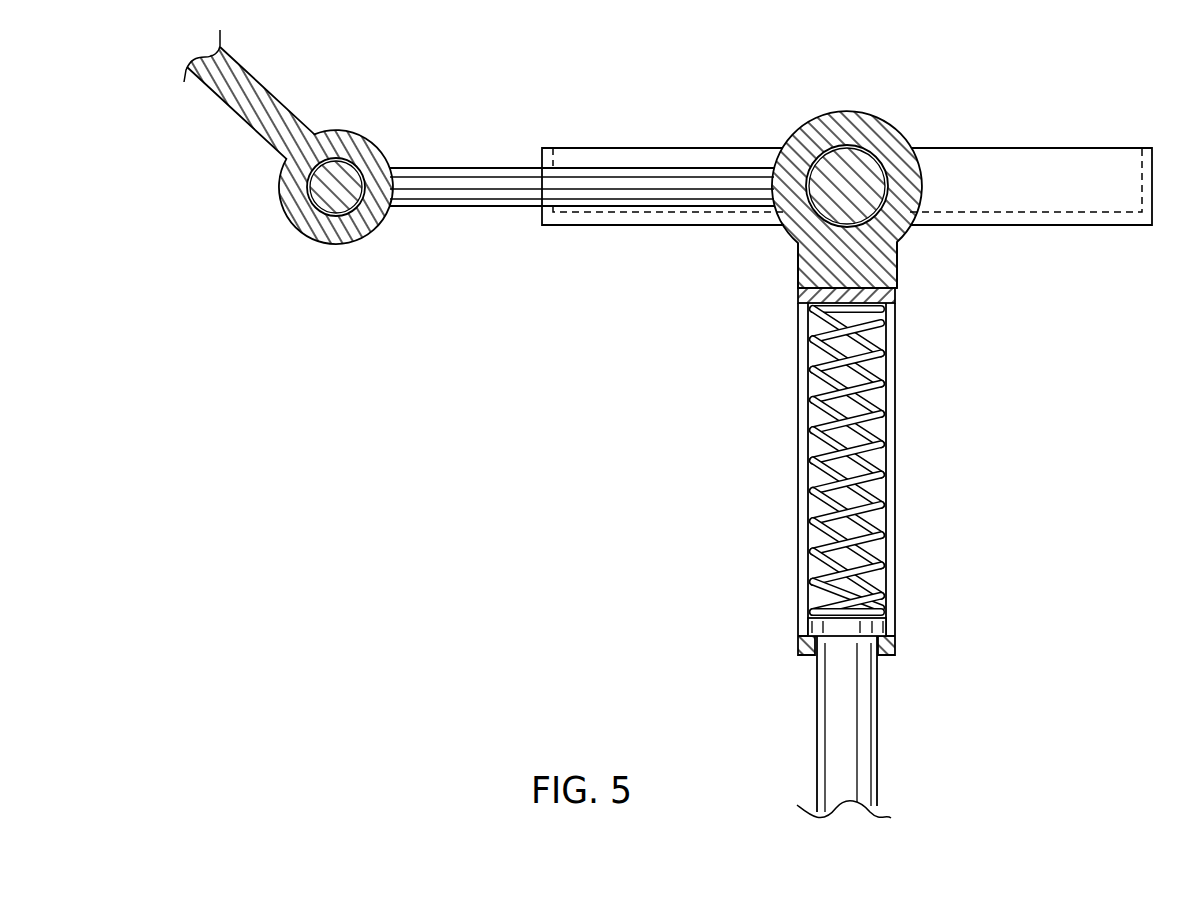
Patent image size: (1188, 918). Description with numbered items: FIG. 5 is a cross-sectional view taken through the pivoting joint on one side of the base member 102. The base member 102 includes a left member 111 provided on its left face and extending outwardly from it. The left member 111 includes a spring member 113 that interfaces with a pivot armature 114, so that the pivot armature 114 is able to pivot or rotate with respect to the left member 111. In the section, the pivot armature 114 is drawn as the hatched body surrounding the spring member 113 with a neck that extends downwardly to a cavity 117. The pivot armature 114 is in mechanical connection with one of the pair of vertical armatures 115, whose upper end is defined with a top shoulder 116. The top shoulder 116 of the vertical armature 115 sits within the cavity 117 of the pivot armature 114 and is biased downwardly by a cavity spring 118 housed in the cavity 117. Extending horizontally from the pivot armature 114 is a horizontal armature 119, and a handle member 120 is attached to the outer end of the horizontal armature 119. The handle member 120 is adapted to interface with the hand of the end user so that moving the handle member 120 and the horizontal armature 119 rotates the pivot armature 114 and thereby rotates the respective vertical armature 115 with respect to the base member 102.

The base member 102 is at (1153, 168).
The left member 111 is at (816, 120).
The spring member 113 is at (845, 168).
The pivot armature 114 is at (907, 235).
The vertical armature 115 is at (877, 735).
The top shoulder 116 is at (845, 638).
The cavity 117 is at (893, 470).
The cavity spring 118 is at (878, 393).
The horizontal armature 119 is at (477, 168).
The handle member 120 is at (276, 100).